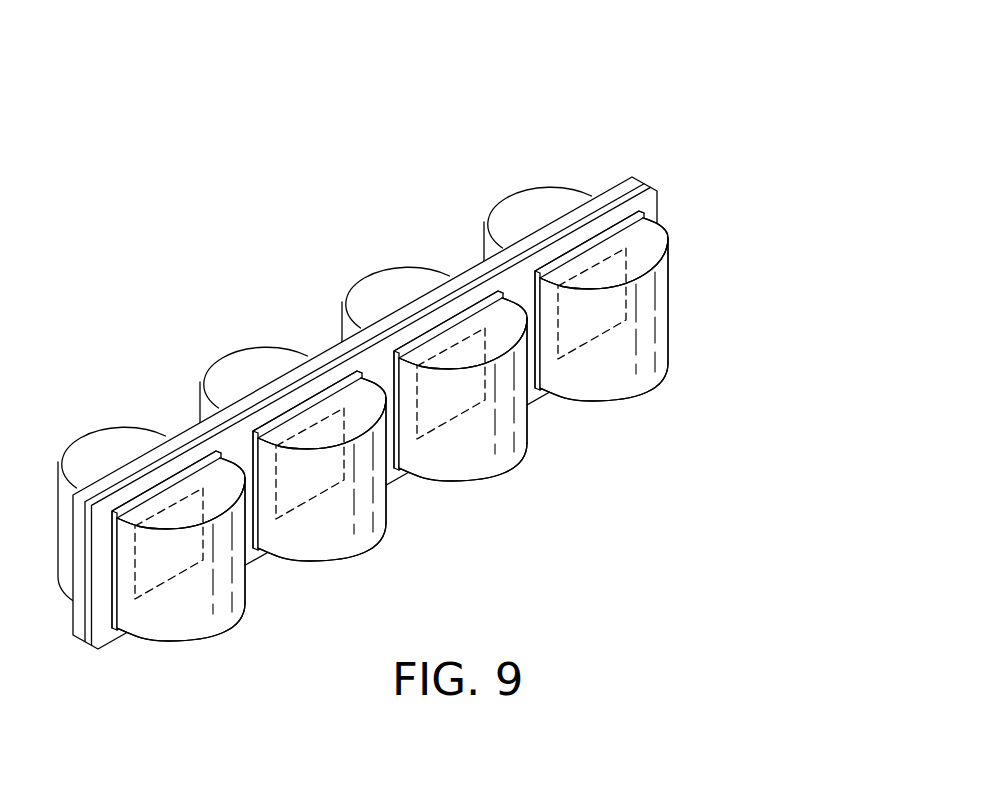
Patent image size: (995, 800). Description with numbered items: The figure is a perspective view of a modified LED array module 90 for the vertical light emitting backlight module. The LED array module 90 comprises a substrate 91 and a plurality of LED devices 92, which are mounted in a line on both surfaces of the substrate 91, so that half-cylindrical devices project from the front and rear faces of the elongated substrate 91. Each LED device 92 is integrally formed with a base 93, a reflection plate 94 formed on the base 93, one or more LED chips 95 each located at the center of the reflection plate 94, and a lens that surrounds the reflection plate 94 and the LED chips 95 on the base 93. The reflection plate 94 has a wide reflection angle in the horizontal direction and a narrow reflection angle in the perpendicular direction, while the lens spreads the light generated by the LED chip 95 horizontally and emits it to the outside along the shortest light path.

The LED array module 90 is at (435, 325).
The substrate 91 is at (633, 177).
The LED device 92 is at (673, 355).
The base 93 is at (538, 390).
The reflection plate 94 is at (600, 340).
The LED chip 95 is at (667, 366).